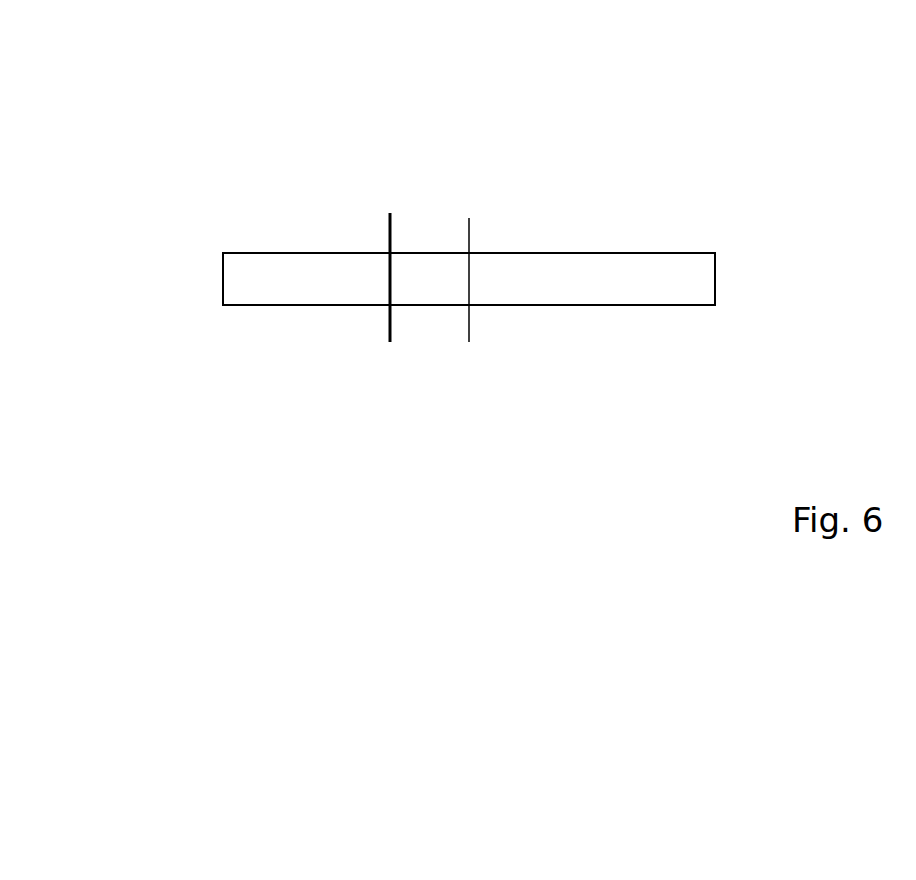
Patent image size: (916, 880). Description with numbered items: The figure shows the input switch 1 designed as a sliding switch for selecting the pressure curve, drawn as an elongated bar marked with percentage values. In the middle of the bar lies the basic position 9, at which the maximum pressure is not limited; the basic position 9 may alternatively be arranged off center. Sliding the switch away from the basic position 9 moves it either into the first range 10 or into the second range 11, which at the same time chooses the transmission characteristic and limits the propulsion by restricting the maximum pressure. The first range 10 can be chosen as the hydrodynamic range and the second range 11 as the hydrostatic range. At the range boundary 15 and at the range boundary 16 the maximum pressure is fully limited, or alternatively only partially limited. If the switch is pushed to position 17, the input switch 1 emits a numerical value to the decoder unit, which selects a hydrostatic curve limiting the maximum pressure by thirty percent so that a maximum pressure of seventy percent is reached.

The input switch 1 is at (688, 153).
The basic position 9 is at (470, 322).
The first range 10 is at (587, 277).
The second range 11 is at (325, 277).
The range boundary 15 is at (715, 274).
The range boundary 16 is at (223, 272).
The position 17 is at (391, 327).